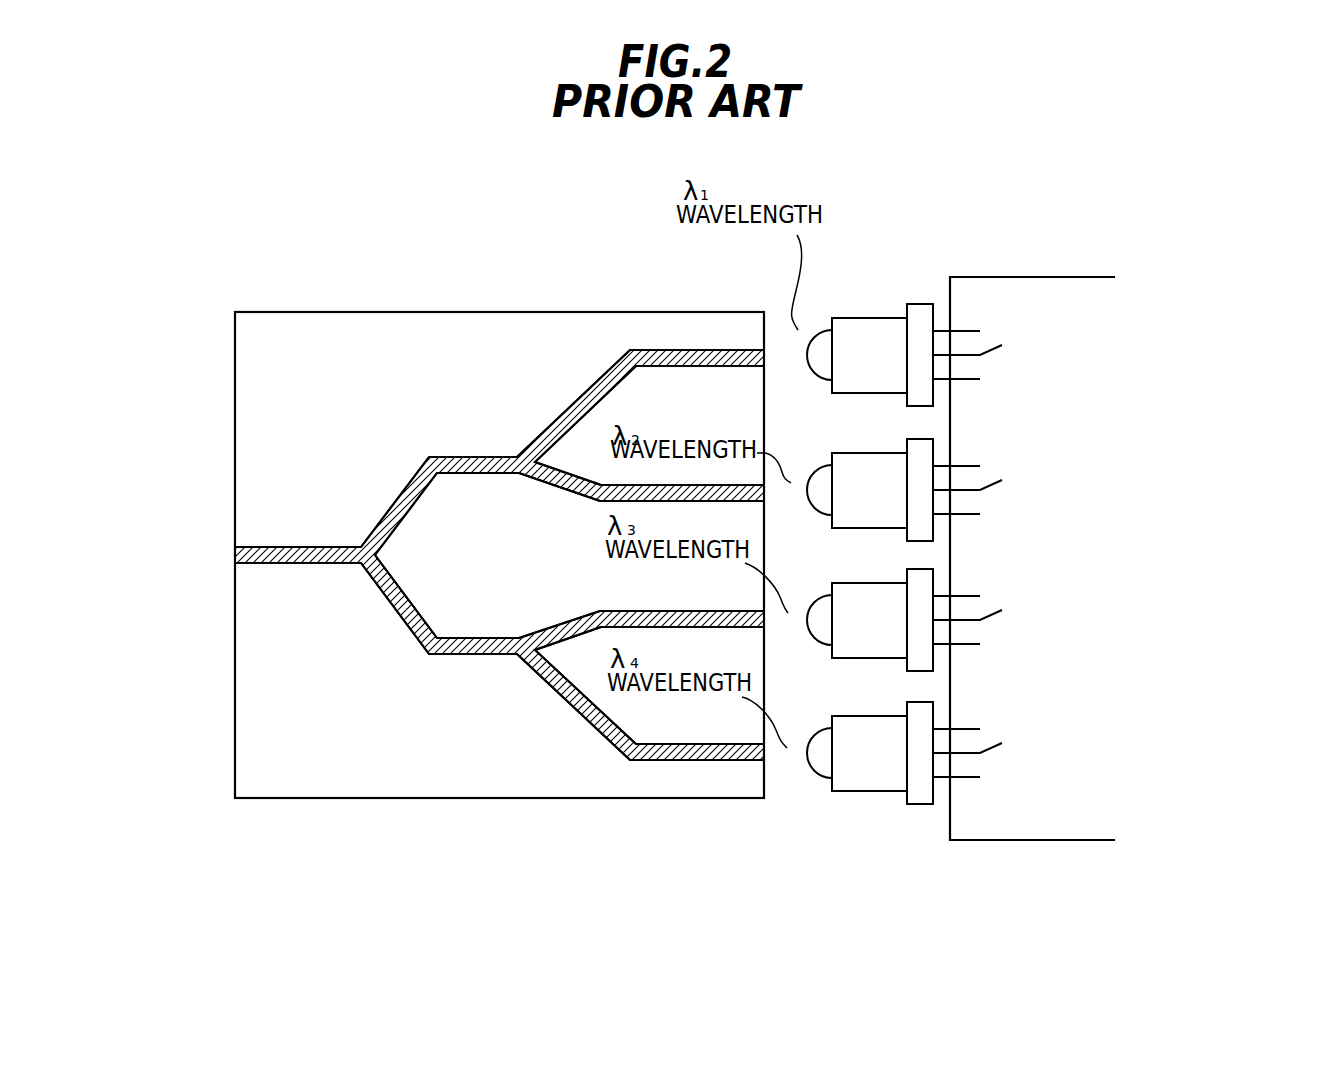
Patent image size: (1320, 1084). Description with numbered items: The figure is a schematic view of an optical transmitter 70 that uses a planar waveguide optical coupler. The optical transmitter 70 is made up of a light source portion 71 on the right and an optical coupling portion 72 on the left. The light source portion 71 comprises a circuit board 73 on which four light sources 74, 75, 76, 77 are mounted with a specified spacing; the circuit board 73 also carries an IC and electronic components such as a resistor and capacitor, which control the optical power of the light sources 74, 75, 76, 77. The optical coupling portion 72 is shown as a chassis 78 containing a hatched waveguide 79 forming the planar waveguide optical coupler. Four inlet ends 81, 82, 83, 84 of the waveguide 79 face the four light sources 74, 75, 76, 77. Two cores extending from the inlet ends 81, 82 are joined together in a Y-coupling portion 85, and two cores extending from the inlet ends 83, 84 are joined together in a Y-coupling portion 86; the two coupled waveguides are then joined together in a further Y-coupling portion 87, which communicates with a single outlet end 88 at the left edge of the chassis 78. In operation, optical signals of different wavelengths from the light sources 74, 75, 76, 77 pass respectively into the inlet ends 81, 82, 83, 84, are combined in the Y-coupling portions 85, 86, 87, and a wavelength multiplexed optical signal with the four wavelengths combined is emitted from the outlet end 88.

The optical transmitter 70 is at (1080, 266).
The light source portion 71 is at (1080, 840).
The optical coupling portion 72 is at (611, 803).
The circuit board 73 is at (982, 815).
The light source 74 is at (876, 333).
The light source 75 is at (882, 462).
The light source 76 is at (881, 592).
The light source 77 is at (876, 730).
The chassis 78 is at (437, 332).
The waveguide 79 is at (667, 342).
The inlet end 81 is at (765, 358).
The inlet end 82 is at (765, 495).
The inlet end 83 is at (765, 622).
The inlet end 84 is at (765, 756).
The Y-coupling portion 85 is at (509, 457).
The Y-coupling portion 86 is at (507, 655).
The Y-coupling portion 87 is at (377, 555).
The outlet end 88 is at (235, 552).